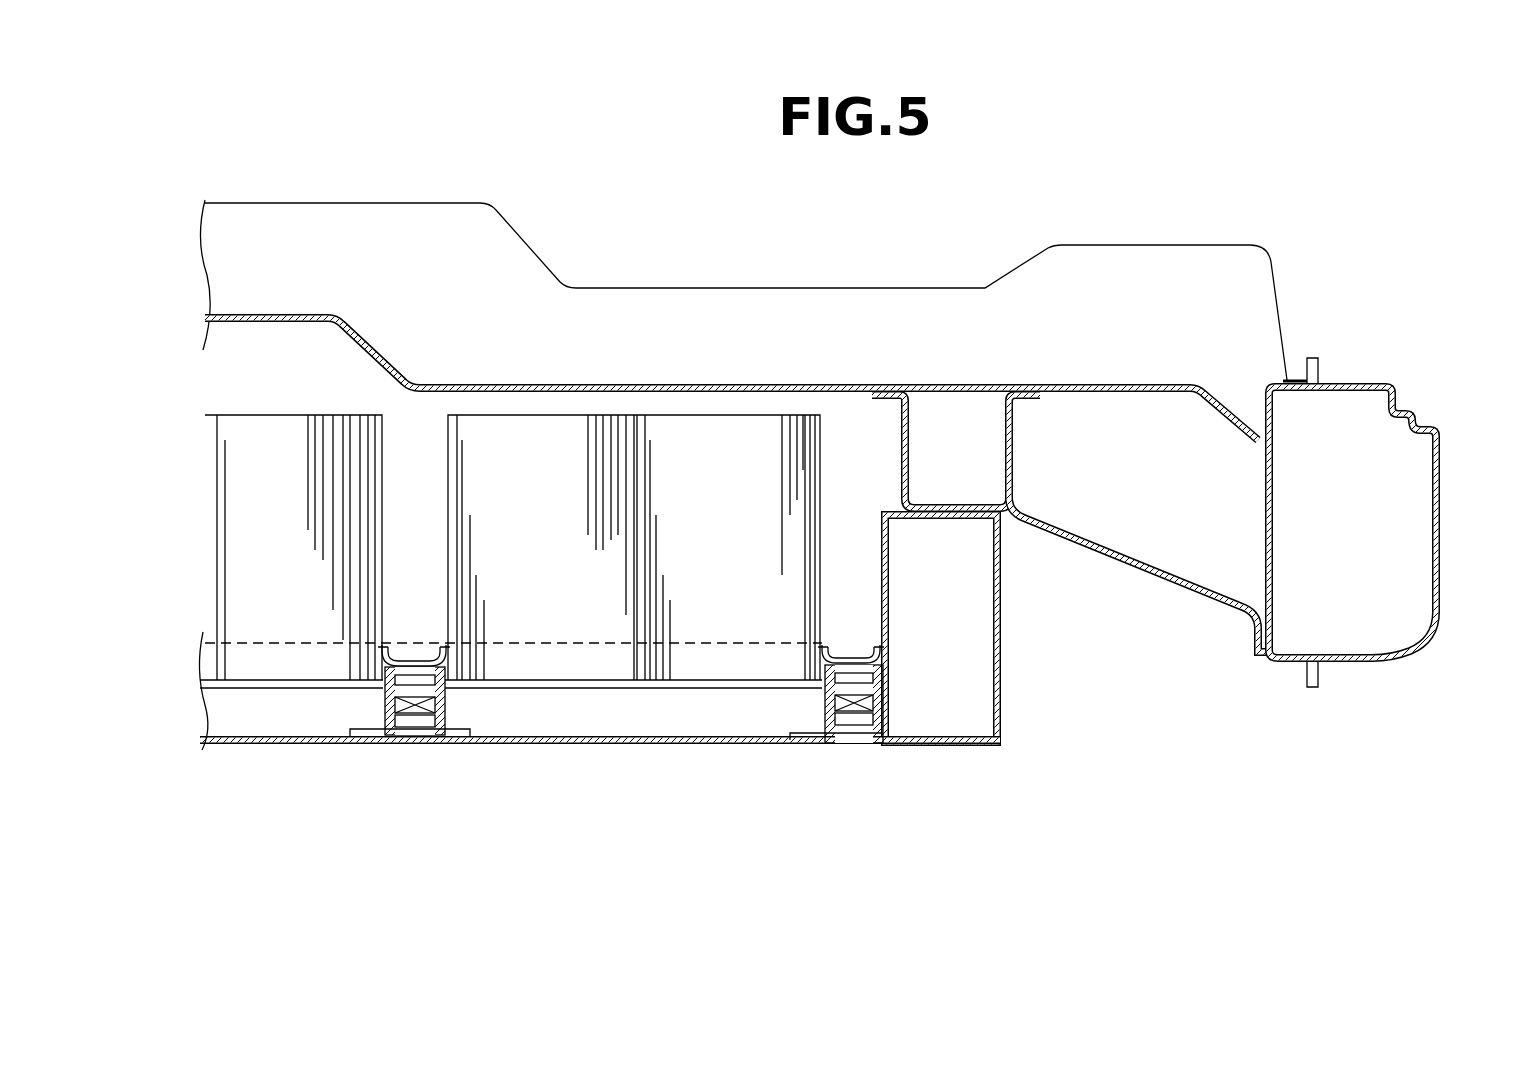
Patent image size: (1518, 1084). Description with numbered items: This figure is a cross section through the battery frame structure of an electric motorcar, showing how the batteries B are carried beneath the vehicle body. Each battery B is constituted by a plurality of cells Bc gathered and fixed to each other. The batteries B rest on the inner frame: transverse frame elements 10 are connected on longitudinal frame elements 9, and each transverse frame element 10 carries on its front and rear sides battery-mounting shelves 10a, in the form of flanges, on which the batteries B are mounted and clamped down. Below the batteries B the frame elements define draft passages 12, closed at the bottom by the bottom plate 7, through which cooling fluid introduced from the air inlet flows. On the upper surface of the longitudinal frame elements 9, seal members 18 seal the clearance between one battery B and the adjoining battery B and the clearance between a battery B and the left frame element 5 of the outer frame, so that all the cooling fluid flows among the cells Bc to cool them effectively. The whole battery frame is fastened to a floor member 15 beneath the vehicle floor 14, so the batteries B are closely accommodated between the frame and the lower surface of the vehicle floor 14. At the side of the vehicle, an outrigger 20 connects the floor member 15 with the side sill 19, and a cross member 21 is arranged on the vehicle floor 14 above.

The left frame element 5 is at (1002, 660).
The bottom plate 7 is at (700, 748).
The longitudinal frame element 9 is at (442, 708).
The transverse frame element 10 is at (430, 646).
The battery-mounting shelf 10a is at (548, 678).
The draft passage 12 is at (295, 716).
The vehicle floor 14 is at (583, 385).
The floor member 15 is at (900, 452).
The seal member 18 is at (398, 645).
The side sill 19 is at (1438, 494).
The outrigger 20 is at (1118, 563).
The cross member 21 is at (903, 287).
The battery B is at (288, 408).
The cell Bc is at (810, 413).